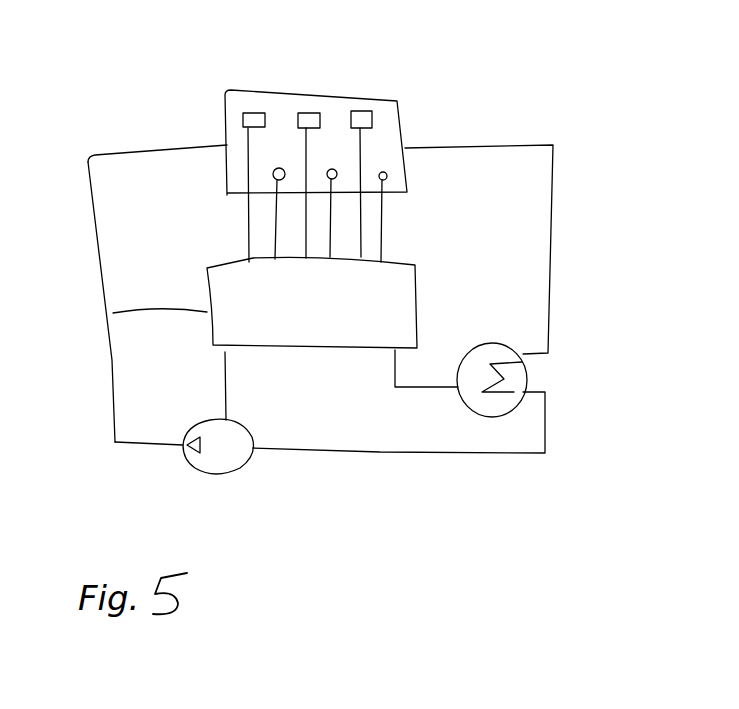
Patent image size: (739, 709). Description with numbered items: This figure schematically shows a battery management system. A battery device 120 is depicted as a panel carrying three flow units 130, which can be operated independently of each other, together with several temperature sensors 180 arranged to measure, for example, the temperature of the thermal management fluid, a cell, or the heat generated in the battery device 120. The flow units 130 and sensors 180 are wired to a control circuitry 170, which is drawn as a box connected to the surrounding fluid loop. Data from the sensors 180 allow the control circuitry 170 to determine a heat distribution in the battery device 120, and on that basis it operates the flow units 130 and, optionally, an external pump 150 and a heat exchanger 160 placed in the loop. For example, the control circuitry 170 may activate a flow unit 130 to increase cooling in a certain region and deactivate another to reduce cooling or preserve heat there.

The battery device 120 is at (347, 135).
The flow unit 130 is at (312, 148).
The external pump 150 is at (218, 480).
The heat exchanger 160 is at (548, 380).
The control circuitry 170 is at (295, 299).
The temperature sensor 180 is at (300, 193).